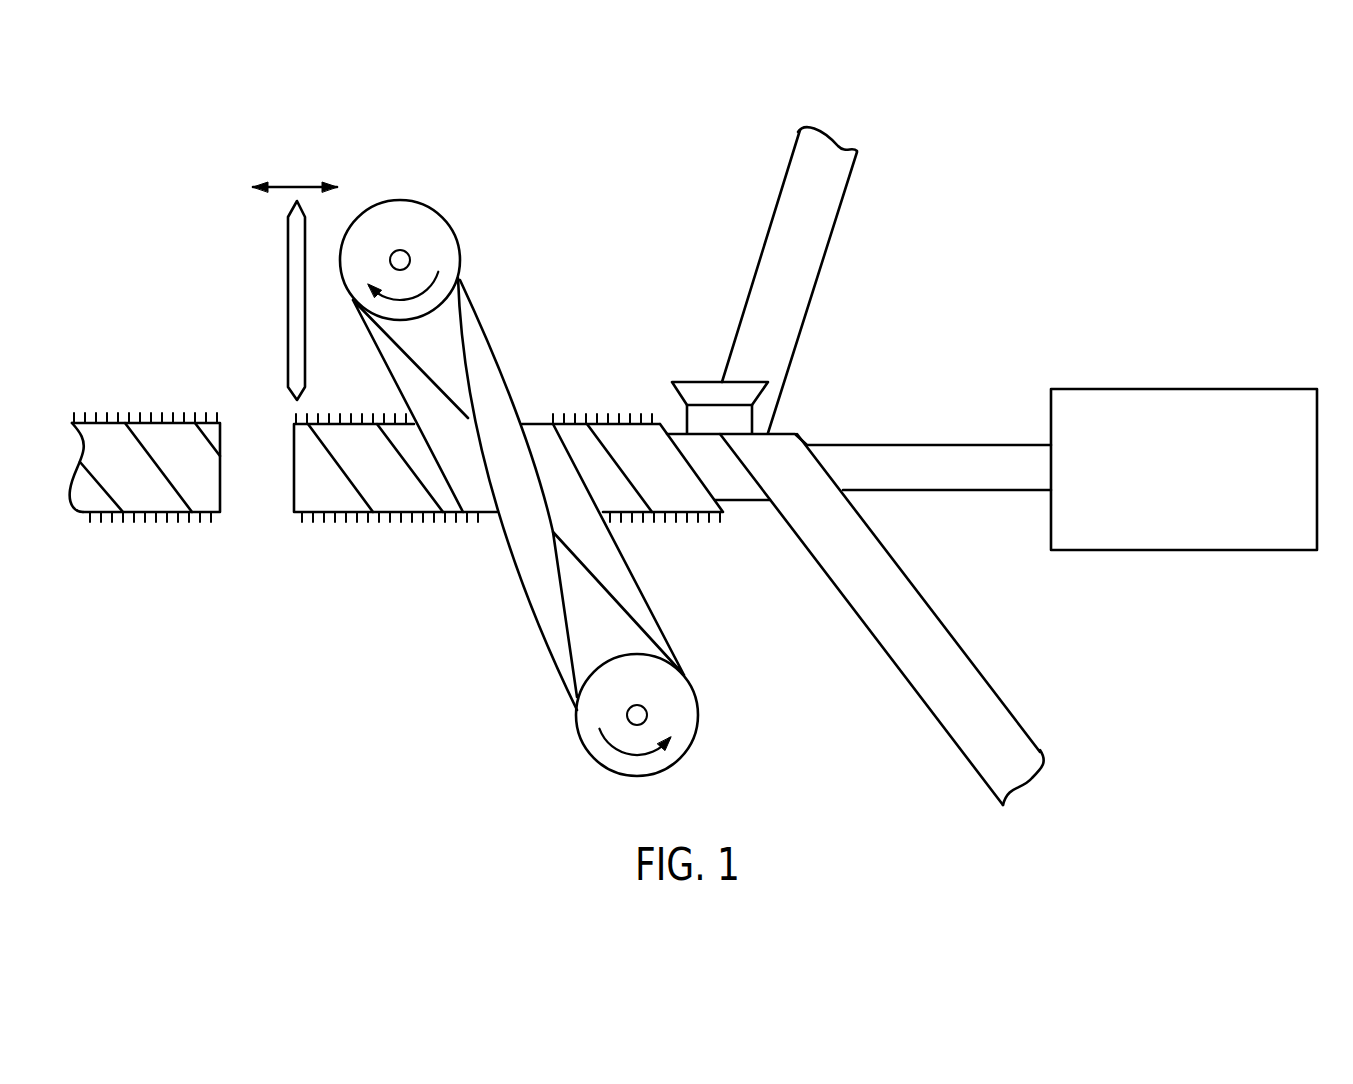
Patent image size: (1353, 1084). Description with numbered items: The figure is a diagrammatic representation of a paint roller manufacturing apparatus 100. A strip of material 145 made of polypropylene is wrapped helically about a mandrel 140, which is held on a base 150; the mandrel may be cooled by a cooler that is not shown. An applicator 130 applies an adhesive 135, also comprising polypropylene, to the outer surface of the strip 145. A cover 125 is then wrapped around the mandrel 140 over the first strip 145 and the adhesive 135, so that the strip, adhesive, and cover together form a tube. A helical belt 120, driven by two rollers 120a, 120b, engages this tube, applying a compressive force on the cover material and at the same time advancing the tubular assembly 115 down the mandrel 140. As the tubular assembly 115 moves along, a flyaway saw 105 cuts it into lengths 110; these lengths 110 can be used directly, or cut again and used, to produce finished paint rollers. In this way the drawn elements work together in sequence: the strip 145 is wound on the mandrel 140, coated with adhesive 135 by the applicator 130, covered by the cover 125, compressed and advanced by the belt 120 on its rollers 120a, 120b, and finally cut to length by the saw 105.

The paint roller manufacturing apparatus 100 is at (1060, 175).
The flyaway saw 105 is at (287, 292).
The lengths 110 is at (143, 487).
The tubular assembly 115 is at (387, 487).
The helical belt 120 is at (521, 542).
The roller 120a is at (442, 235).
The roller 120b is at (599, 751).
The cover 125 is at (783, 234).
The applicator 130 is at (695, 392).
The adhesive 135 is at (702, 424).
The mandrel 140 is at (945, 457).
The strip of material 145 is at (922, 677).
The base 150 is at (1183, 406).